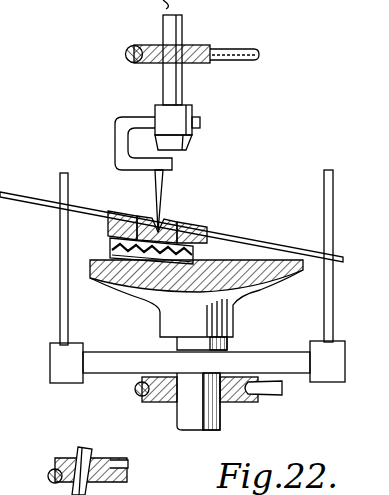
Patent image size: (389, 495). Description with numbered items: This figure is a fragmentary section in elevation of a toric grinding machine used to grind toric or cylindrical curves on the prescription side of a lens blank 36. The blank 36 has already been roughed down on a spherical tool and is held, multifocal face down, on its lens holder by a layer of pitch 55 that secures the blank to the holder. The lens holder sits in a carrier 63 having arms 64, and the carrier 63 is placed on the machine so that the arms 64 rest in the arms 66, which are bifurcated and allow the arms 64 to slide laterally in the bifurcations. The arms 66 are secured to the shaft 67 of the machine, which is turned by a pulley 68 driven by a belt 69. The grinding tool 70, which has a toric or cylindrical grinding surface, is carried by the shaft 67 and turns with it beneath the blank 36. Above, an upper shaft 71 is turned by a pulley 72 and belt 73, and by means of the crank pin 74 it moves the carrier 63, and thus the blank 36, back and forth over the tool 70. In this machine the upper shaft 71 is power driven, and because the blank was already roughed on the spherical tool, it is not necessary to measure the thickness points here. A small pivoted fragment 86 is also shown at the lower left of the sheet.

The lens blank 36 is at (123, 263).
The layer of pitch 55 is at (115, 250).
The carrier 63 is at (205, 222).
The arms 64 is at (78, 207).
The arms 66 is at (58, 290).
The shaft 67 is at (206, 395).
The pulley 68 is at (258, 400).
The belt 69 is at (272, 388).
The grinding tool 70 is at (270, 287).
The upper shaft 71 is at (195, 135).
The pulley 72 is at (200, 62).
The belt 73 is at (234, 48).
The crank pin 74 is at (165, 190).
The pivot arm 86 is at (127, 473).